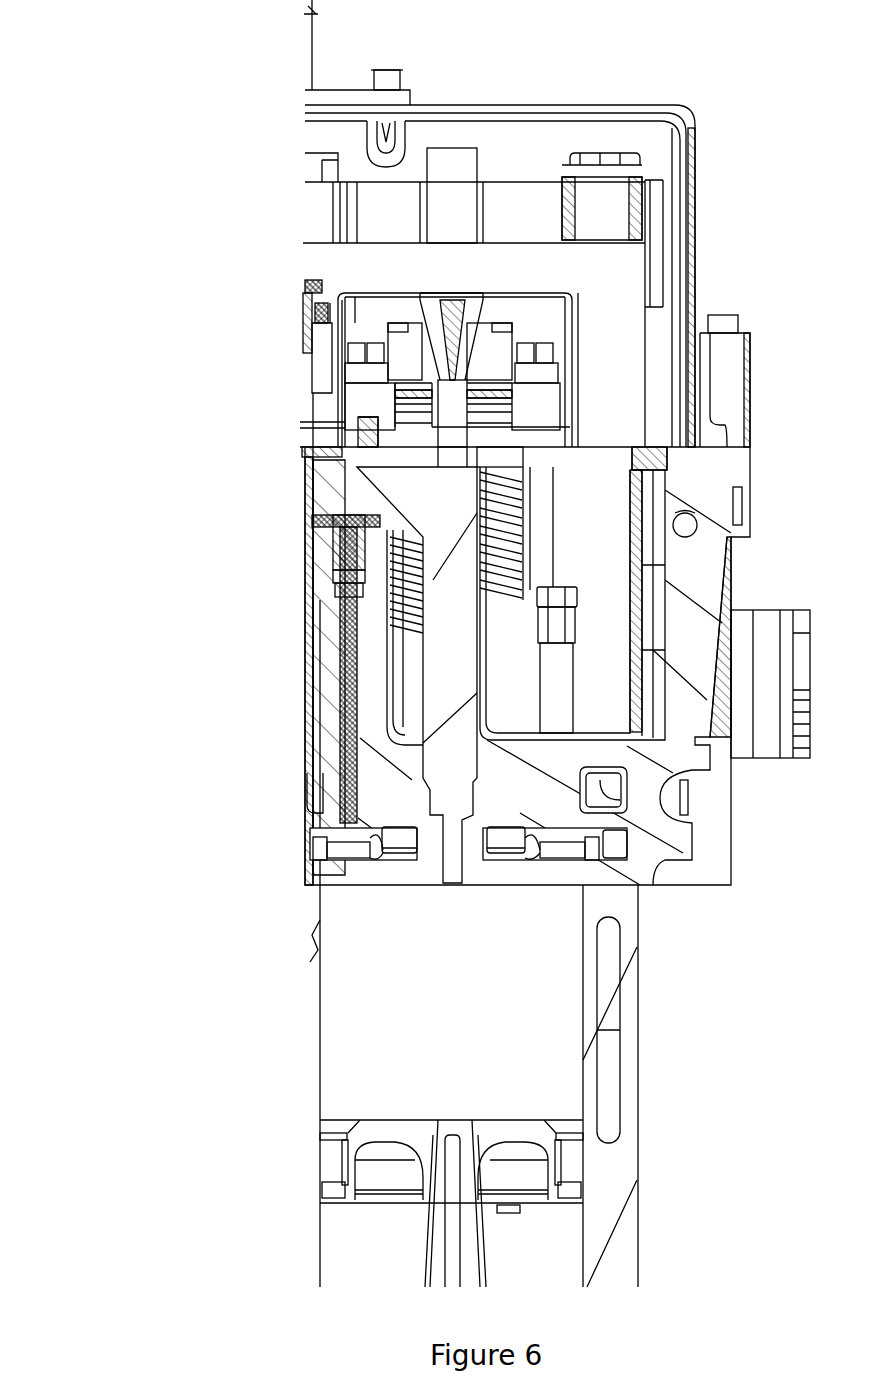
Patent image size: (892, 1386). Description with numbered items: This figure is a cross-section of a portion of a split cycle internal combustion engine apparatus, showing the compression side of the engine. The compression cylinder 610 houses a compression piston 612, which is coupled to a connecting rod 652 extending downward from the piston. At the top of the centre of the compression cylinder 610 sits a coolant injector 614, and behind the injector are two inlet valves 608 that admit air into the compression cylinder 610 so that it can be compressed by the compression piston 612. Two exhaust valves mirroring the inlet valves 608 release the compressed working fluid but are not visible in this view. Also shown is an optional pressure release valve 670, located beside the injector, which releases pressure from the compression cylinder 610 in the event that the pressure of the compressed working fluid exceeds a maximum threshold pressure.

The inlet valves 608 is at (483, 500).
The coolant injector 614 is at (447, 683).
The pressure release valve 670 is at (350, 770).
The compression cylinder 610 is at (365, 984).
The compression piston 612 is at (405, 1135).
The connecting rod 652 is at (427, 1254).